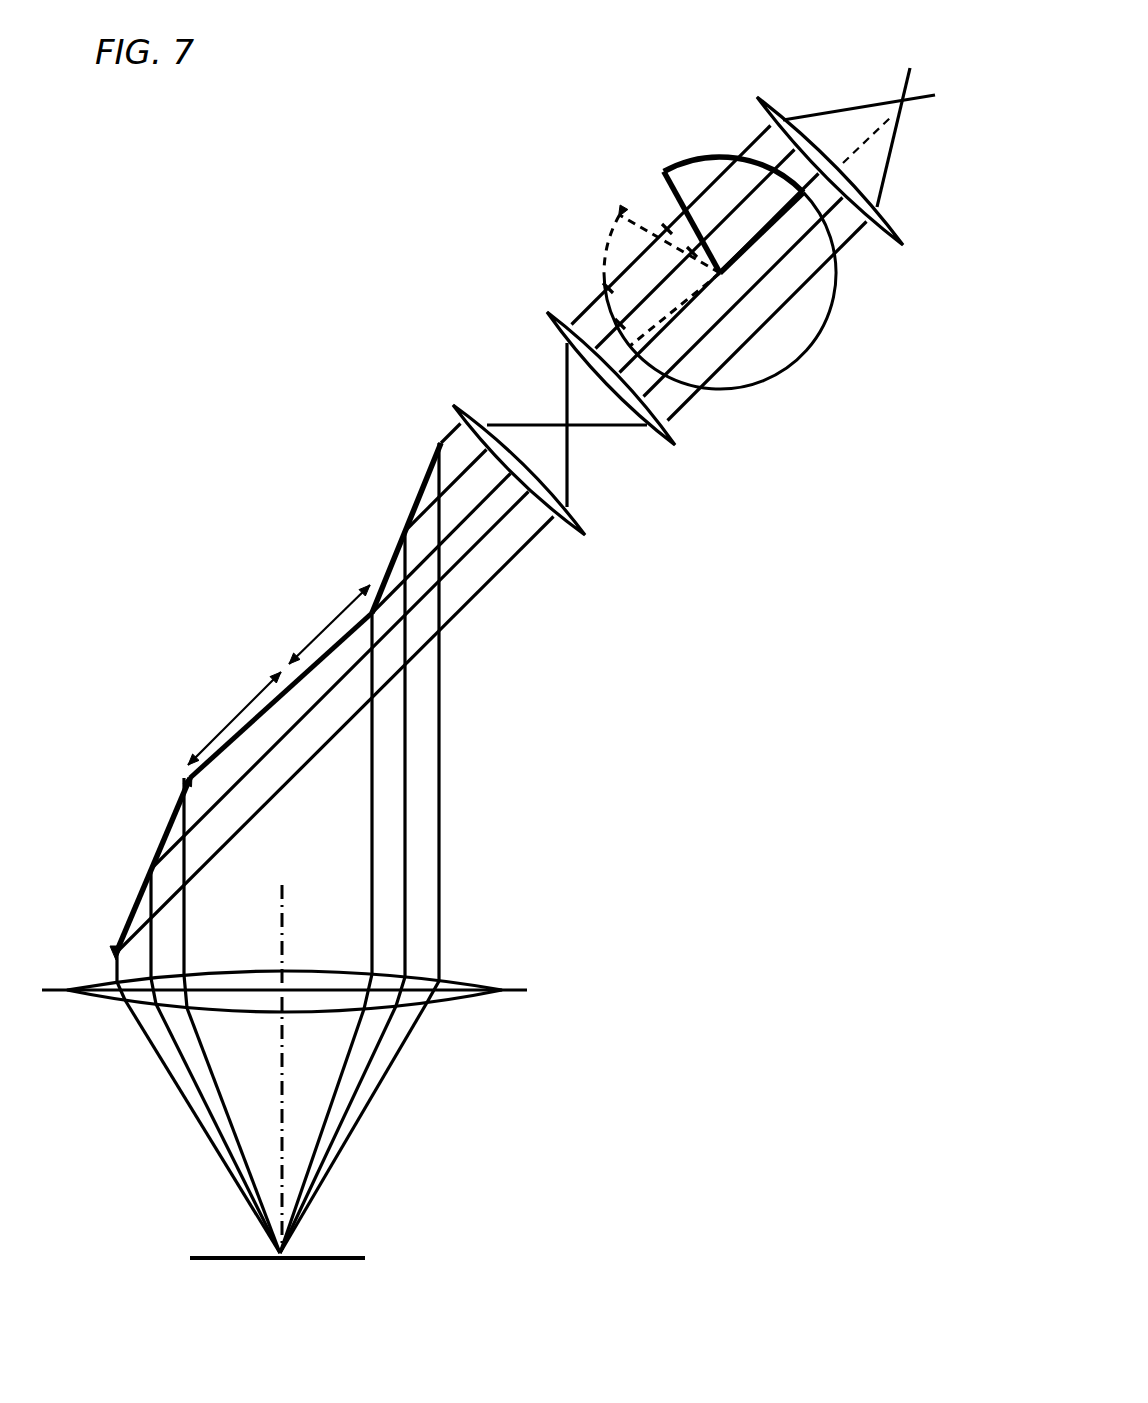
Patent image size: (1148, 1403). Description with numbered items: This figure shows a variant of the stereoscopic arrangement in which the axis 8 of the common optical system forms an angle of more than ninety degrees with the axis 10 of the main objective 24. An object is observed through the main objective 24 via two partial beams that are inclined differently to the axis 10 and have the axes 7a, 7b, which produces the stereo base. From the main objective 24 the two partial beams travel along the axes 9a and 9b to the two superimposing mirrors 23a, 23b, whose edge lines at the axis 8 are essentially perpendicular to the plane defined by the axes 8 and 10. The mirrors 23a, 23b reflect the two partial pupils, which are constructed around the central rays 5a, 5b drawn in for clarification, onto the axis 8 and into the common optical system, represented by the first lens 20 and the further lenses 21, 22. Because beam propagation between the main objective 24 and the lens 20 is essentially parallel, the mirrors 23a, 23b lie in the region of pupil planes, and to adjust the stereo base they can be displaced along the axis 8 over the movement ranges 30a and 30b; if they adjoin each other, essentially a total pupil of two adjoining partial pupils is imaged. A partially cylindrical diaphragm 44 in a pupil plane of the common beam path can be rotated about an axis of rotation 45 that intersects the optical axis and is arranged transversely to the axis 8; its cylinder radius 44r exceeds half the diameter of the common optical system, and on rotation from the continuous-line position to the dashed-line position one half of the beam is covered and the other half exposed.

The central ray 5a is at (272, 747).
The central ray 5b is at (441, 443).
The axis of partial beam 7a is at (212, 1117).
The axis of partial beam 7b is at (330, 1150).
The axis of the common optical system 8 is at (345, 633).
The axis of partial beam from main objective 9a is at (152, 947).
The axis of partial beam from main objective 9b is at (405, 945).
The axis of the main objective 10 is at (278, 1203).
The first lens 20 is at (455, 405).
The lens 21 is at (553, 318).
The lens 22 is at (783, 118).
The superimposing mirror 23a is at (163, 827).
The superimposing mirror 23b is at (413, 497).
The main objective 24 is at (458, 982).
The movement range 30a is at (252, 700).
The movement range 30b is at (318, 640).
The partially cylindrical diaphragm 44 is at (687, 163).
The cylinder radius 44r is at (657, 182).
The axis of rotation 45 is at (718, 266).